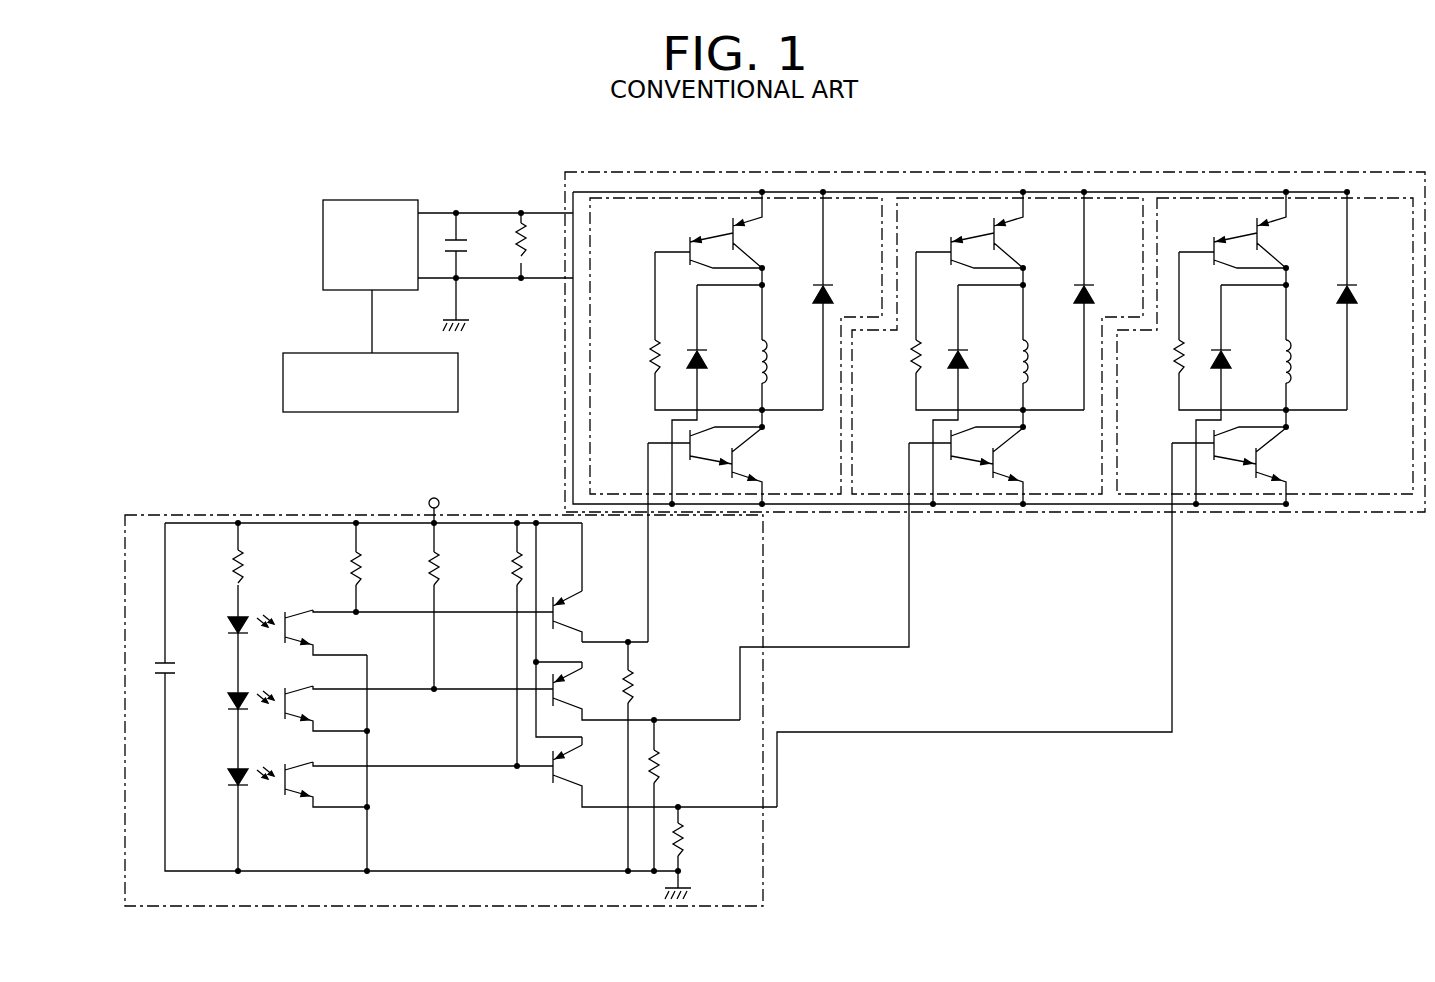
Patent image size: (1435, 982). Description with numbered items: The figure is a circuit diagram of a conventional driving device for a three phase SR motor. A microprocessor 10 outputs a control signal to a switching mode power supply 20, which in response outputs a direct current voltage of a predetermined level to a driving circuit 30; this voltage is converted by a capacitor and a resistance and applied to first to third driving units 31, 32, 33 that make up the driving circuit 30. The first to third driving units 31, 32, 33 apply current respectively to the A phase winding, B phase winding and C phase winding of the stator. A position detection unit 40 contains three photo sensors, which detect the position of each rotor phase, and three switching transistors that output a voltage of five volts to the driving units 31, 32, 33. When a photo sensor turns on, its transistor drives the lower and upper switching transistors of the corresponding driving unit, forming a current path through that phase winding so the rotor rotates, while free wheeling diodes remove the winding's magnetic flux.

The microprocessor 10 is at (283, 385).
The switching mode power supply 20 is at (323, 243).
The driving circuit 30 is at (952, 172).
The first driving unit 31 is at (683, 196).
The second driving unit 32 is at (1057, 196).
The third driving unit 33 is at (1243, 196).
The position detection unit 40 is at (763, 563).